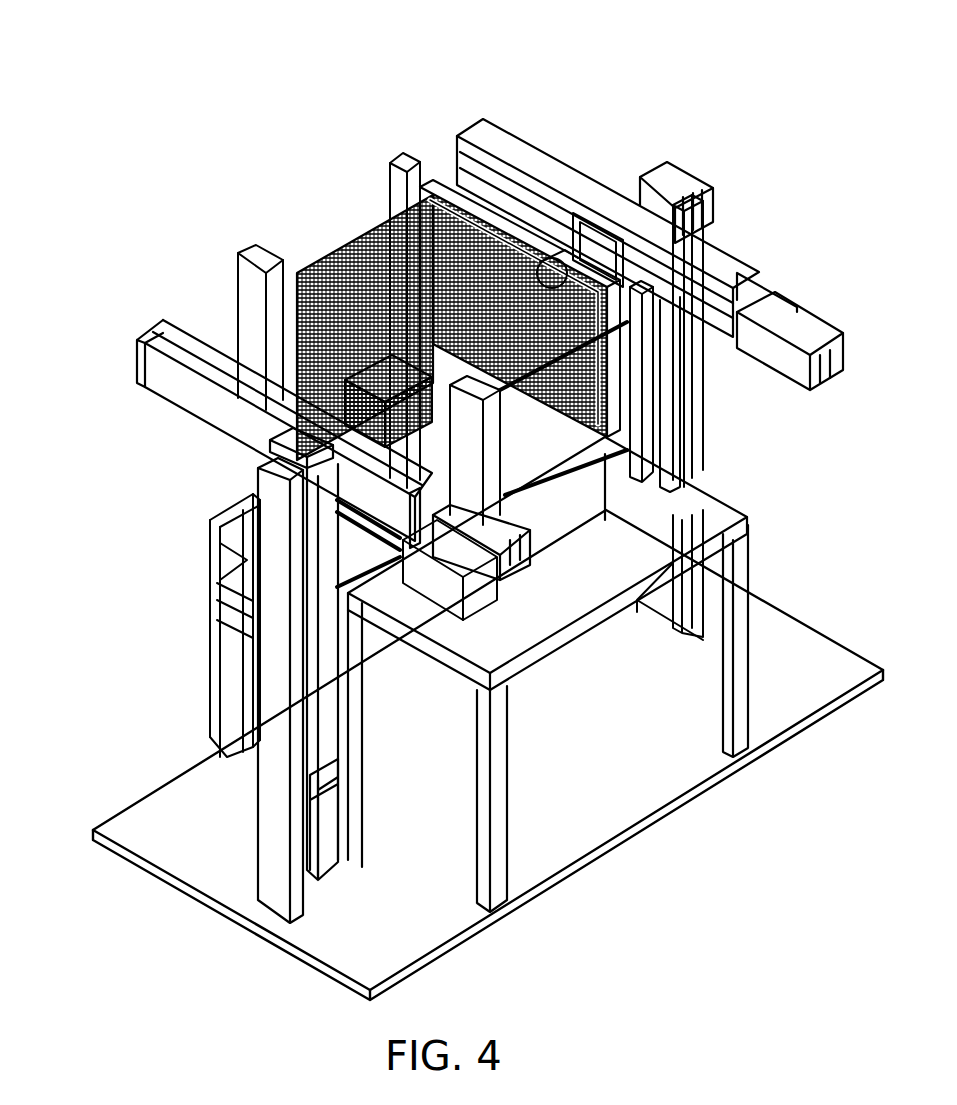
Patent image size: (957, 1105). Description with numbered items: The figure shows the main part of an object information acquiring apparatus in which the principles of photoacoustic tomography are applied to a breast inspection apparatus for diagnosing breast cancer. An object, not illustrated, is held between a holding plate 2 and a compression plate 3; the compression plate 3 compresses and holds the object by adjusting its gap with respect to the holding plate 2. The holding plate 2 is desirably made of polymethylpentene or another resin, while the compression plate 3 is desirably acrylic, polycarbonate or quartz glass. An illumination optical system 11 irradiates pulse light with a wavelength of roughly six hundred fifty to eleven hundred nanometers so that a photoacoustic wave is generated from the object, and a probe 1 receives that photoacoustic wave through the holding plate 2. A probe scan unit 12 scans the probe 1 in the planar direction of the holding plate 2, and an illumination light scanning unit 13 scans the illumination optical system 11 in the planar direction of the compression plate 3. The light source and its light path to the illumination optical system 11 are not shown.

The probe 1 is at (330, 322).
The holding plate 2 is at (330, 322).
The compression plate 3 is at (460, 200).
The illumination optical system 11 is at (563, 253).
The probe scan unit 12 is at (330, 743).
The illumination light scanning unit 13 is at (707, 263).